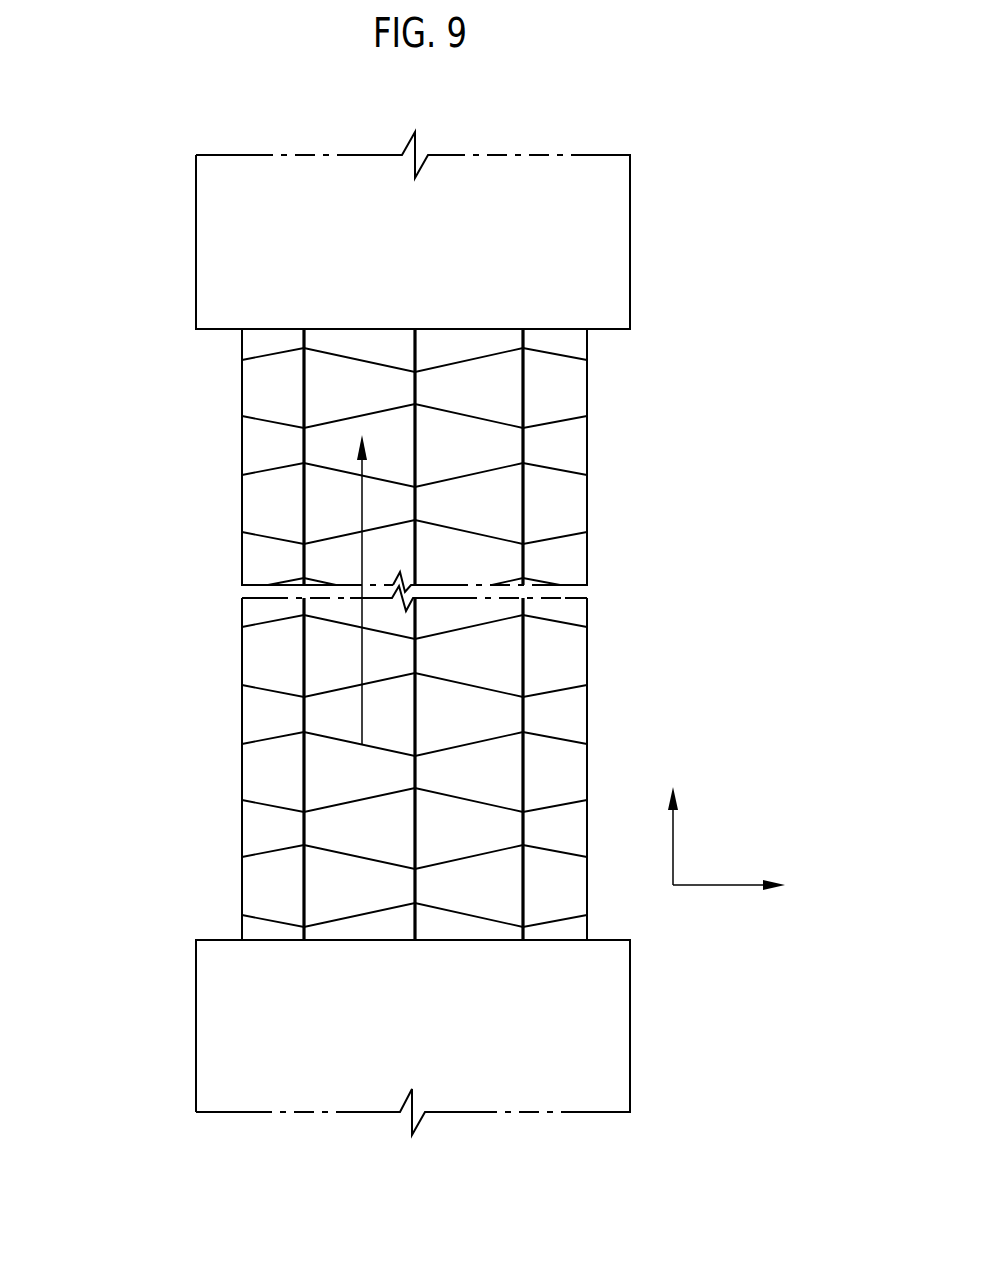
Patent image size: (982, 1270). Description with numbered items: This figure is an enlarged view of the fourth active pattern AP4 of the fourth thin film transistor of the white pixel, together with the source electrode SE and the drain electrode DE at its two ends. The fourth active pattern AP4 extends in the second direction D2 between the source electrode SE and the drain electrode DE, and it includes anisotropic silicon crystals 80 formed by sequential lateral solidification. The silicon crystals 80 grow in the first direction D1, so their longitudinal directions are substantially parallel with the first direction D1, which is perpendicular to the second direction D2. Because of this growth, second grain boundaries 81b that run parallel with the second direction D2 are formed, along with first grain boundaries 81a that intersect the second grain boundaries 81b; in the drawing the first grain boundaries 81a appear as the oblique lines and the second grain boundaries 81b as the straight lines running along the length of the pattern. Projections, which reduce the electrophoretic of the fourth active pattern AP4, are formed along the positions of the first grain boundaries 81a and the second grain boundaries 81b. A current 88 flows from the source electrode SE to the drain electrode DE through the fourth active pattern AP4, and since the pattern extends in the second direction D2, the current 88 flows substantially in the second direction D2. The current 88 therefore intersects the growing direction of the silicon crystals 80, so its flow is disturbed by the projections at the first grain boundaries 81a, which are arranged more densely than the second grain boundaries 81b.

The drain electrode DE is at (623, 243).
The source electrode SE is at (620, 1025).
The fourth active pattern AP4 is at (328, 634).
The silicon crystals 80 is at (262, 717).
The first grain boundaries 81a is at (270, 852).
The second grain boundaries 81b is at (300, 770).
The current 88 is at (363, 497).
The first direction D1 is at (743, 886).
The second direction D2 is at (674, 820).